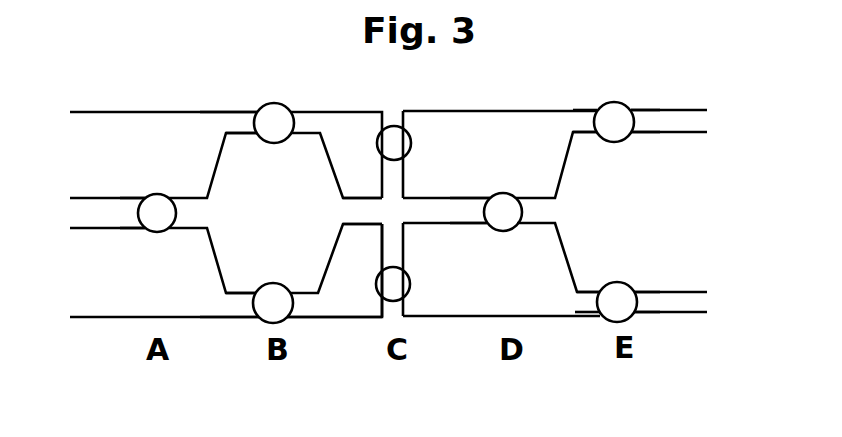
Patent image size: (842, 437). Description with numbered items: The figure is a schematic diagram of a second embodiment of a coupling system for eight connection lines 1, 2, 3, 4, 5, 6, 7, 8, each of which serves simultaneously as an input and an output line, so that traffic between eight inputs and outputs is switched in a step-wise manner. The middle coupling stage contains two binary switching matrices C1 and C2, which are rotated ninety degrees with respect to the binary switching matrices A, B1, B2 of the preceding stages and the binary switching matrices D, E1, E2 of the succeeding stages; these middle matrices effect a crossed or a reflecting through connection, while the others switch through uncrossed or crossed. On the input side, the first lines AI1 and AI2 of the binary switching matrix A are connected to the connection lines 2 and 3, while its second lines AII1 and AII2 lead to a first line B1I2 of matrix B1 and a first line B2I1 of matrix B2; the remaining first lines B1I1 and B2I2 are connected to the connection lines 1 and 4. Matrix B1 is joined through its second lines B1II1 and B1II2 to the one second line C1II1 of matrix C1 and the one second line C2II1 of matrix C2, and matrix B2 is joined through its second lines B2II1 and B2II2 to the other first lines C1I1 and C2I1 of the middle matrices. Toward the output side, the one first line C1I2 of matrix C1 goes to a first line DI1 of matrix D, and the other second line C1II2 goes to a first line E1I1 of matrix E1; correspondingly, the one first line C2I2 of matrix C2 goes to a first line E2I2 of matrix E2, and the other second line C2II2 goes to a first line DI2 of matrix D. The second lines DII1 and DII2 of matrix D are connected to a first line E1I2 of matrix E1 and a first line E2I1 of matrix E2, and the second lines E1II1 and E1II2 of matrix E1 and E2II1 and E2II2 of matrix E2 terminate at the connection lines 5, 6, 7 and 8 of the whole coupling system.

The connection line 1 is at (153, 113).
The connection line 2 is at (97, 199).
The connection line 3 is at (97, 228).
The connection line 4 is at (154, 318).
The connection line 5 is at (680, 111).
The connection line 6 is at (680, 134).
The connection line 7 is at (682, 292).
The connection line 8 is at (682, 314).
The binary switching matrix A is at (157, 213).
The binary switching matrix B1 is at (274, 123).
The binary switching matrix B2 is at (273, 303).
The binary switching matrix C1 is at (394, 143).
The binary switching matrix C2 is at (393, 284).
The binary switching matrix D is at (503, 212).
The binary switching matrix E1 is at (614, 122).
The binary switching matrix E2 is at (617, 302).
The first line AI1 is at (147, 194).
The first line AI2 is at (145, 232).
The second line AII1 is at (171, 181).
The second line AII2 is at (169, 232).
The first line B1I1 is at (247, 106).
The first line B1I2 is at (245, 137).
The second line B1II1 is at (300, 93).
The second line B1II2 is at (302, 137).
The first line B2I1 is at (252, 293).
The first line B2I2 is at (258, 318).
The second line B2II1 is at (293, 293).
The second line B2II2 is at (289, 318).
The first line C1I1 is at (382, 198).
The first line C1I2 is at (404, 198).
The second line C1II1 is at (382, 126).
The second line C1II2 is at (404, 126).
The first line C2I1 is at (378, 304).
The first line C2I2 is at (416, 298).
The second line C2II1 is at (382, 238).
The second line C2II2 is at (412, 233).
The first line DI1 is at (470, 172).
The first line DI2 is at (478, 226).
The second line DII1 is at (540, 200).
The second line DII2 is at (540, 222).
The first line E1I1 is at (594, 106).
The first line E1I2 is at (585, 136).
The second line E1II1 is at (638, 93).
The second line E1II2 is at (641, 136).
The first line E2I1 is at (595, 291).
The first line E2I2 is at (600, 317).
The second line E2II1 is at (638, 291).
The second line E2II2 is at (634, 317).